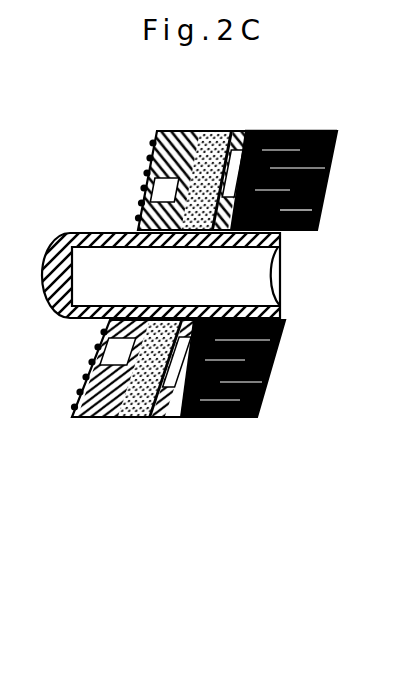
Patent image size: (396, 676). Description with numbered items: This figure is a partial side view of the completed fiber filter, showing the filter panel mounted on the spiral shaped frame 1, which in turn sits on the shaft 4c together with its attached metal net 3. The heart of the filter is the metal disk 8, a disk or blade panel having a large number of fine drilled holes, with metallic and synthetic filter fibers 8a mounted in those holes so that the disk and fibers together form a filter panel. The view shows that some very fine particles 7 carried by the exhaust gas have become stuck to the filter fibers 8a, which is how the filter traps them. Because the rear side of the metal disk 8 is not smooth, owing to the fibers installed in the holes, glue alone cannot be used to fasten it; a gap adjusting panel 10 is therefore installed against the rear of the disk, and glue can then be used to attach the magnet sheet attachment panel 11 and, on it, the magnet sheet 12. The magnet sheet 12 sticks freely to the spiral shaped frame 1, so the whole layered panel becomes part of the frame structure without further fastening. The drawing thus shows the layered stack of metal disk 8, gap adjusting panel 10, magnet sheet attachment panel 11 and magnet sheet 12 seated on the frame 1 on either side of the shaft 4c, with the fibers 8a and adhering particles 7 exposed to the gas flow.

The spiral shaped frame 1 is at (182, 130).
The metal net 3 is at (143, 205).
The very fine particles 7 is at (318, 201).
The metal disk 8 is at (173, 418).
The filter fibers 8a is at (294, 131).
The gap adjusting panel 10 is at (153, 420).
The magnet sheet attachment panel 11 is at (221, 131).
The magnet sheet 12 is at (113, 420).
The shaft 4c is at (213, 270).